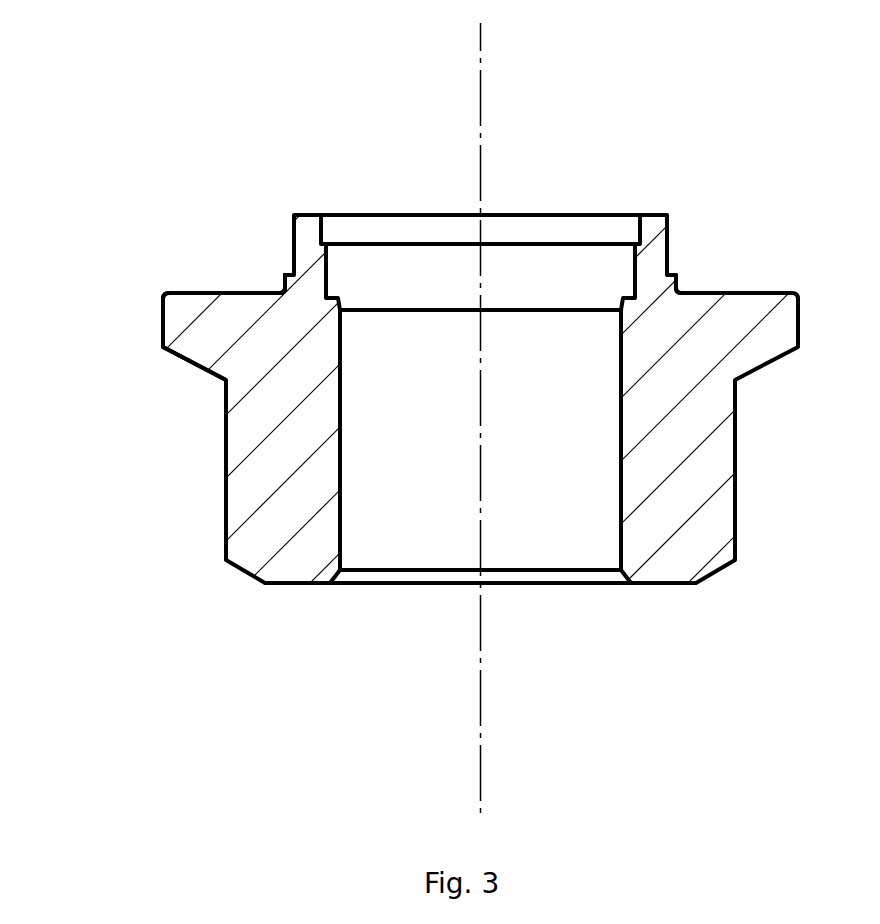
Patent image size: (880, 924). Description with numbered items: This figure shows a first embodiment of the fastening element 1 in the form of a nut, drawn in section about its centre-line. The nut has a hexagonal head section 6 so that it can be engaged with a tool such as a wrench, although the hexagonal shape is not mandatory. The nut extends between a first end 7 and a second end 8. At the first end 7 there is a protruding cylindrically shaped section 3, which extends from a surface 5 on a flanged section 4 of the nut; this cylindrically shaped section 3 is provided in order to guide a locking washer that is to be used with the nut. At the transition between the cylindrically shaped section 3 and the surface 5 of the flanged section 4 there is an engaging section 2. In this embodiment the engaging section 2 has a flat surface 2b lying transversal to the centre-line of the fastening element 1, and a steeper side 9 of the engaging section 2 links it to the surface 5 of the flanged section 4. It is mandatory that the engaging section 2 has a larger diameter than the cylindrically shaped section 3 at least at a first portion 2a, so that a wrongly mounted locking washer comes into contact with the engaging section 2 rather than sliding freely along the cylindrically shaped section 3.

The fastening element 1 is at (138, 72).
The engaging section 2 is at (285, 276).
The cylindrically shaped section 3 is at (292, 232).
The first portion 2a is at (283, 277).
The steeper side 9 is at (280, 283).
The surface 5 is at (198, 291).
The flanged section 4 is at (177, 360).
The hexagonal head section 6 is at (226, 498).
The first end 7 is at (400, 165).
The flat surface 2b is at (675, 278).
The second end 8 is at (546, 653).